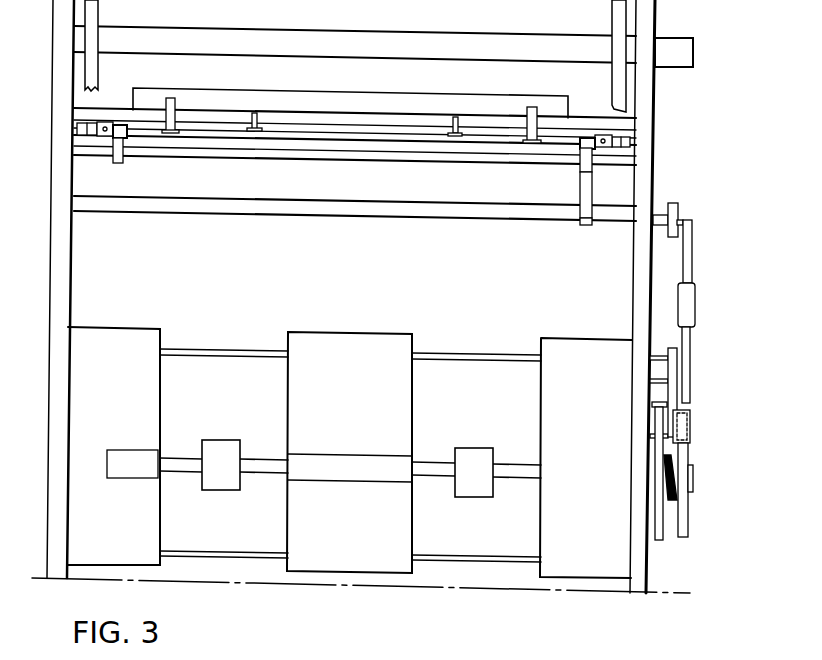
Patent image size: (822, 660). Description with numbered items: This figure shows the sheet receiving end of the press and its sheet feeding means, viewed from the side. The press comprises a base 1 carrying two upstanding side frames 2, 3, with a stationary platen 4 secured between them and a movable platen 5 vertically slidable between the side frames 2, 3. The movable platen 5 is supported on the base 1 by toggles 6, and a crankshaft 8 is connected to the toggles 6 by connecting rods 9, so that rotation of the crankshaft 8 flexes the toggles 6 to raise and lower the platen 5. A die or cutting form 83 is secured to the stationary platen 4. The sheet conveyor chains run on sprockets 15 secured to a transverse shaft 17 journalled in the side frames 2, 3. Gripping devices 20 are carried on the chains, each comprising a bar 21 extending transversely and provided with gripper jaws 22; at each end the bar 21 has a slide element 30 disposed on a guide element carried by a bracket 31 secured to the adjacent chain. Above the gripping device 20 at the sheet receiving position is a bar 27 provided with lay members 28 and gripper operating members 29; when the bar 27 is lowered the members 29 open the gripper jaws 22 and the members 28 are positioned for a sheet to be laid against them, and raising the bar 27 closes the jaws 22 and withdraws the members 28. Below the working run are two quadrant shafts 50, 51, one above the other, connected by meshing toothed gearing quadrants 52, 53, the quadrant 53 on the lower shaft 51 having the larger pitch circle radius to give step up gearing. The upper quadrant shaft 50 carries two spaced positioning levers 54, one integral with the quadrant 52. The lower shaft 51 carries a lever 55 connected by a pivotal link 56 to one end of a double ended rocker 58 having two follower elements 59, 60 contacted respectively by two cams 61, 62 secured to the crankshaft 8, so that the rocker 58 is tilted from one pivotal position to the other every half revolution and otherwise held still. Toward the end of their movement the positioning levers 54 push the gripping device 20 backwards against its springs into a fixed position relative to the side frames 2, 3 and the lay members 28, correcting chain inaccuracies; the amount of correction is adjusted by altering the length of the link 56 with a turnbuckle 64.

The base 1 is at (358, 569).
The side frame 2 is at (630, 537).
The side frame 3 is at (68, 526).
The stationary platen 4 is at (383, 128).
The movable platen 5 is at (351, 296).
The toggles 6 is at (289, 392).
The crankshaft 8 is at (349, 485).
The connecting rods 9 is at (223, 482).
The sprockets 15 is at (100, 3).
The transverse shaft 17 is at (238, 33).
The gripping device 20 is at (314, 142).
The bar 21 is at (385, 142).
The gripper jaws 22 is at (360, 135).
The bar 27 is at (300, 99).
The lay members 28 is at (172, 116).
The gripper operating members 29 is at (428, 116).
The slide element 30 is at (119, 124).
The bracket 31 is at (103, 121).
The quadrant shaft 50 is at (186, 159).
The quadrant shaft 51 is at (187, 218).
The toothed gearing quadrant 52 is at (591, 170).
The toothed gearing quadrant 53 is at (582, 226).
The positioning levers 54 is at (120, 163).
The lever 55 is at (679, 212).
The pivotal link 56 is at (684, 248).
The double ended rocker 58 is at (672, 368).
The follower element 59 is at (657, 408).
The follower element 60 is at (691, 412).
The cam 61 is at (660, 542).
The cam 62 is at (683, 536).
The turnbuckle 64 is at (678, 300).
The die or cutting form 83 is at (326, 127).